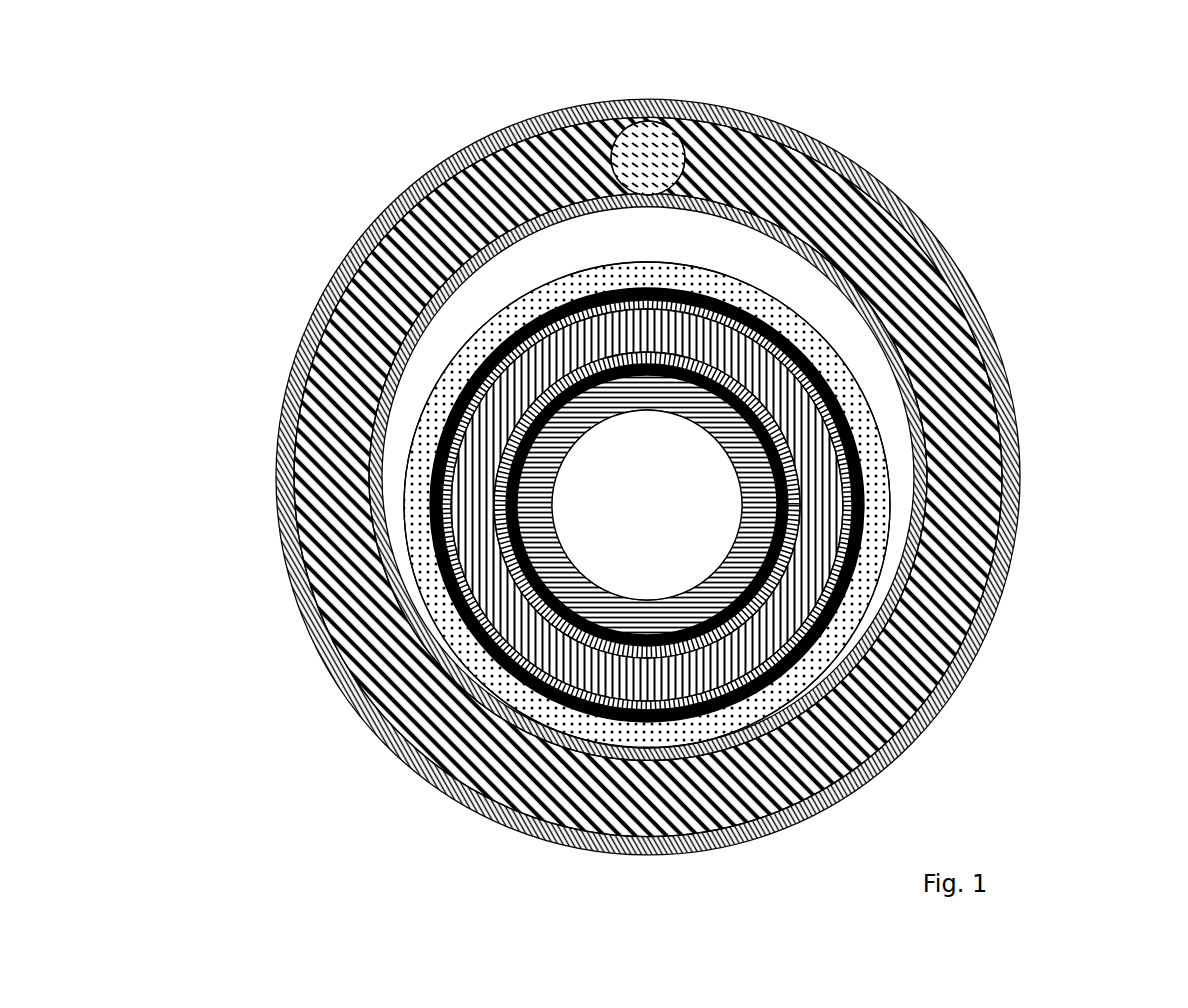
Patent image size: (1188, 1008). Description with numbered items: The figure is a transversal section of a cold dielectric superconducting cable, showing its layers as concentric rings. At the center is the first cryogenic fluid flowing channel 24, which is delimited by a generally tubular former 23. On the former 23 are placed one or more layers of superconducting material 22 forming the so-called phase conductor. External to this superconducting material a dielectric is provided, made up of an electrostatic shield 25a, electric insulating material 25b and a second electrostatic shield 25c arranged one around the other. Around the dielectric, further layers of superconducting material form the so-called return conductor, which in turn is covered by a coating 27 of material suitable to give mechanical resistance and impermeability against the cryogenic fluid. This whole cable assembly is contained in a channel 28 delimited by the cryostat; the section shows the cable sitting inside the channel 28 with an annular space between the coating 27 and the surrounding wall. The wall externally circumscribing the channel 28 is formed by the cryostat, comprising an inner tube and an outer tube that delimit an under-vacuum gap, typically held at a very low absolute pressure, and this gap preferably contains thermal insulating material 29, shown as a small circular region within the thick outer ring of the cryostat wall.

The superconducting material 22 is at (537, 400).
The former 23 is at (555, 320).
The first cryogenic fluid flowing channel 24 is at (618, 548).
The electrostatic shield 25a is at (493, 450).
The electric insulating material 25b is at (462, 506).
The second electrostatic shield 25c is at (455, 603).
The coating 27 is at (863, 568).
The channel 28 is at (897, 488).
The thermal insulating material 29 is at (657, 157).